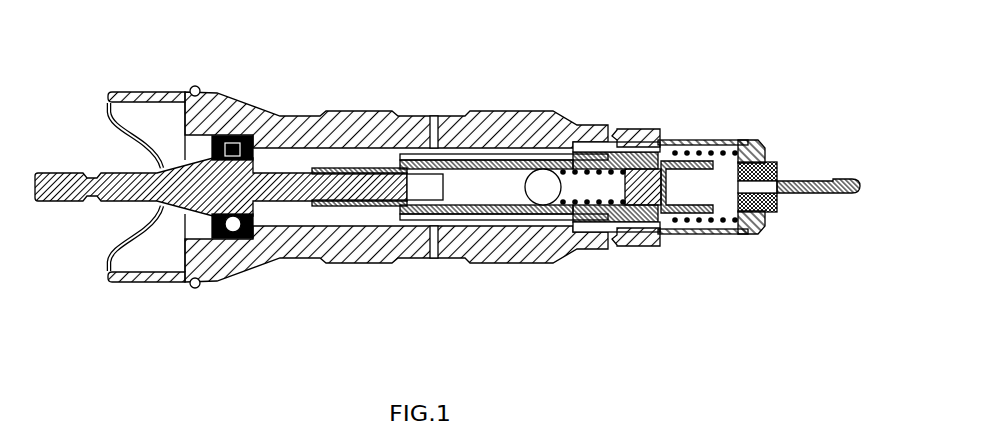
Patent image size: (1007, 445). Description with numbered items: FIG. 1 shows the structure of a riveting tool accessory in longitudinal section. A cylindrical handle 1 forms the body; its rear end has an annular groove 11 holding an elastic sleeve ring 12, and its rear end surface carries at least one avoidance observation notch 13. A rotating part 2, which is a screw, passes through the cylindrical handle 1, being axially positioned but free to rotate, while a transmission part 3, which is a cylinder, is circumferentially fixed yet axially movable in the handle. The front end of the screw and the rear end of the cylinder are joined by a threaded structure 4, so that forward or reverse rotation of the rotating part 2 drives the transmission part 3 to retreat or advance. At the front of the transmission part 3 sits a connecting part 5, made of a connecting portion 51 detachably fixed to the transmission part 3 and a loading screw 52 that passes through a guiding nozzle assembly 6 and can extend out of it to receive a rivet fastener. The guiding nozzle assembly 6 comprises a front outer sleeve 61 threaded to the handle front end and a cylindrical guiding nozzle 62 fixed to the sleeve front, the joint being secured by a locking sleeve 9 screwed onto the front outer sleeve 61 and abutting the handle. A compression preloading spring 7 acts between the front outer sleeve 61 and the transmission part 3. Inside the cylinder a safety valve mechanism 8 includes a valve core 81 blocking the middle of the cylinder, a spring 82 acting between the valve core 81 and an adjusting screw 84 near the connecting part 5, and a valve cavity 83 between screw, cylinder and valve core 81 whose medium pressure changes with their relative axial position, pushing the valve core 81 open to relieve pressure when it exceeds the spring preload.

The cylindrical handle 1 is at (290, 116).
The annular groove 11 is at (186, 92).
The elastic sleeve ring 12 is at (194, 86).
The avoidance observation notch 13 is at (133, 235).
The rotating part 2 is at (262, 212).
The transmission part 3 is at (468, 157).
The threaded structure 4 is at (385, 212).
The connecting part 5 is at (727, 193).
The connecting portion 51 is at (682, 197).
The loading screw 52 is at (820, 185).
The guiding nozzle assembly 6 is at (777, 145).
The front outer sleeve 61 is at (747, 230).
The cylindrical guiding nozzle 62 is at (778, 207).
The compression preloading spring 7 is at (702, 140).
The safety valve mechanism 8 is at (448, 153).
The valve core 81 is at (543, 190).
The spring 82 is at (563, 253).
The valve cavity 83 is at (478, 183).
The adjusting screw 84 is at (636, 160).
The locking sleeve 9 is at (633, 243).